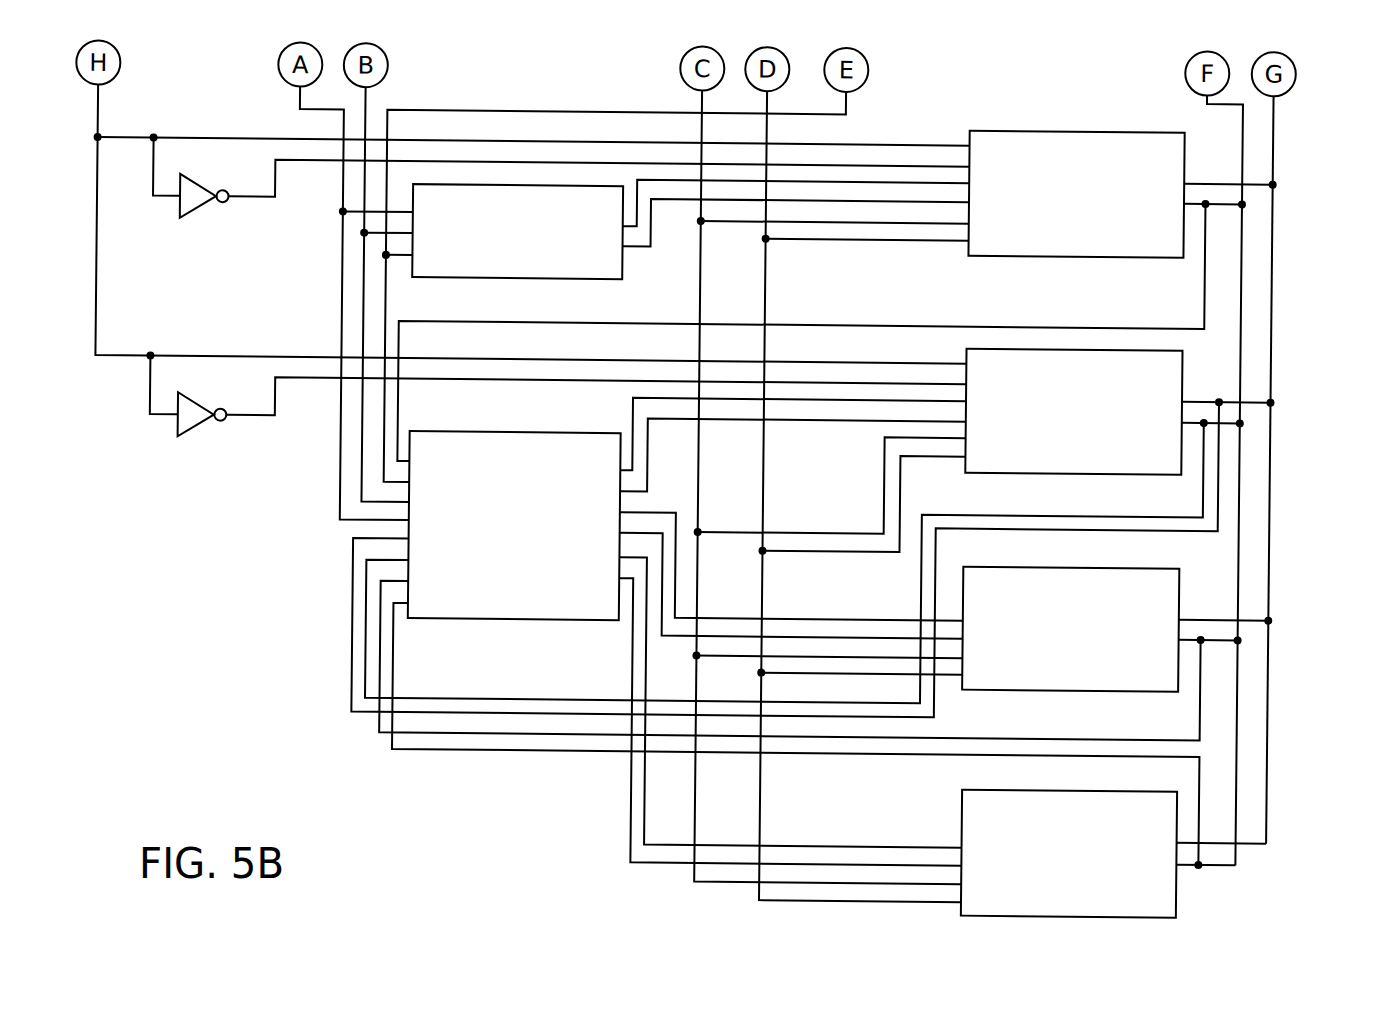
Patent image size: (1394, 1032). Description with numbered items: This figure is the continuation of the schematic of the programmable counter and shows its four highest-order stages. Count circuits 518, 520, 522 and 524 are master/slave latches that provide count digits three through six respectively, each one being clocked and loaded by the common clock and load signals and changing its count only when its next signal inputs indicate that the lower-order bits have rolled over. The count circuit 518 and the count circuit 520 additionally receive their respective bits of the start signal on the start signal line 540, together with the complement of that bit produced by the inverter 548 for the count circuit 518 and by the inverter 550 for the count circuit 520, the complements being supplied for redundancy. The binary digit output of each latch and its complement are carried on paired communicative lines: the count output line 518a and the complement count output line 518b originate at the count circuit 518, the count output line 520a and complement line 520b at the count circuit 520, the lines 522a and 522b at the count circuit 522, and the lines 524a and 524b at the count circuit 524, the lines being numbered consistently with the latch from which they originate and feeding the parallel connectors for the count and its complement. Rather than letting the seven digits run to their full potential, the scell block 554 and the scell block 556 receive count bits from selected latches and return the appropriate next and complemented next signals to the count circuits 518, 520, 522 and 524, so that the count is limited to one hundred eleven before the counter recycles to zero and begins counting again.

The count circuit 518 is at (1085, 253).
The count output line 518a is at (1210, 175).
The complement count output line 518b is at (1222, 203).
The count circuit 520 is at (1087, 473).
The count output line 520a is at (1199, 395).
The complement count output line 520b is at (1220, 420).
The count circuit 522 is at (1084, 685).
The count output line 522a is at (1221, 612).
The complement count output line 522b is at (1218, 638).
The count circuit 524 is at (965, 805).
The count output line 524a is at (1213, 838).
The complement count output line 524b is at (1224, 860).
The start signal line 540 is at (92, 131).
The inverter 548 is at (199, 190).
The inverter 550 is at (200, 408).
The scell block 554 is at (525, 280).
The scell block 556 is at (513, 621).